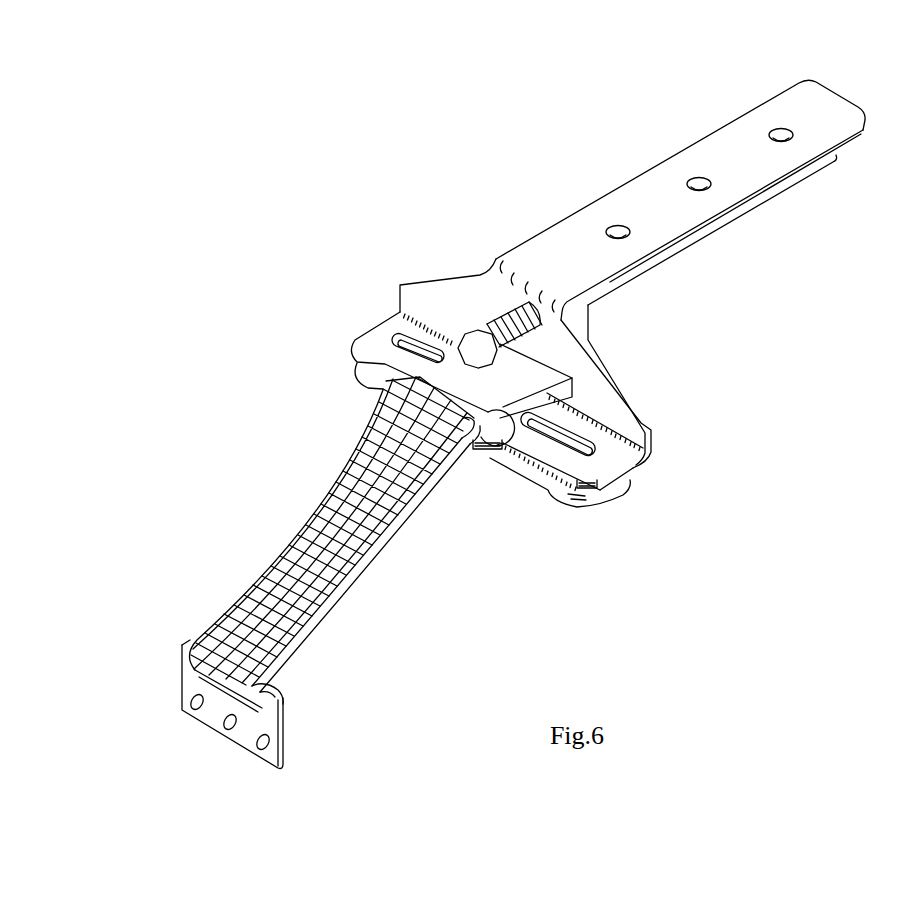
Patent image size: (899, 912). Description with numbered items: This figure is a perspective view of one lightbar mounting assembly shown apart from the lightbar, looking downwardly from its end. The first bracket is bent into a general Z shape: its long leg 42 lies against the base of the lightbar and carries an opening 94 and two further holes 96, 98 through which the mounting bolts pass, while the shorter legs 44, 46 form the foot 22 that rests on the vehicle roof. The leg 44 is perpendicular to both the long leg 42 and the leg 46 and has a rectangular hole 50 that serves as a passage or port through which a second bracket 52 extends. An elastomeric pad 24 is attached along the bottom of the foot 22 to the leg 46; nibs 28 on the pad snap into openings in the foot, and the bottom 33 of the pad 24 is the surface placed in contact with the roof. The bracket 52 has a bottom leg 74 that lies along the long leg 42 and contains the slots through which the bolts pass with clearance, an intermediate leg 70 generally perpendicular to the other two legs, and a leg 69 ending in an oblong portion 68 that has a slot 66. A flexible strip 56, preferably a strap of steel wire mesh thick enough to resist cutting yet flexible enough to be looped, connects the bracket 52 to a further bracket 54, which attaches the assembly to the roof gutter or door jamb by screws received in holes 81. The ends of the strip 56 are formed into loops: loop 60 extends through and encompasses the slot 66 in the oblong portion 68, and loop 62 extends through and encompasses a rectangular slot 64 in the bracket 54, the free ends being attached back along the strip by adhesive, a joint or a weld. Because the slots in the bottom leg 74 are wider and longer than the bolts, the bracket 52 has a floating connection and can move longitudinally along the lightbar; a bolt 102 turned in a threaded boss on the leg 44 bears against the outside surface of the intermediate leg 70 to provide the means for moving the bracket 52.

The foot 22 is at (526, 449).
The pad 24 is at (615, 492).
The projections or nibs 28 is at (398, 333).
The bottom of pad 33 is at (570, 507).
The long leg 42 is at (591, 248).
The leg 44 is at (560, 287).
The leg 46 is at (363, 343).
The rectangular hole 50 is at (565, 401).
The bracket 52 is at (678, 190).
The bracket 54 is at (267, 737).
The flexible strip 56 is at (340, 544).
The loop 60 is at (467, 430).
The loop 62 is at (300, 664).
The rectangular opening or slot 64 is at (280, 698).
The opening or slot 66 is at (385, 418).
The oblong portion 68 is at (483, 449).
The leg 69 is at (545, 396).
The intermediate leg 70 is at (591, 334).
The bottom leg 74 is at (637, 278).
The holes 81 is at (260, 749).
The opening 94 is at (688, 177).
The hole 96 is at (604, 226).
The hole 98 is at (773, 128).
The bolt 102 is at (496, 318).